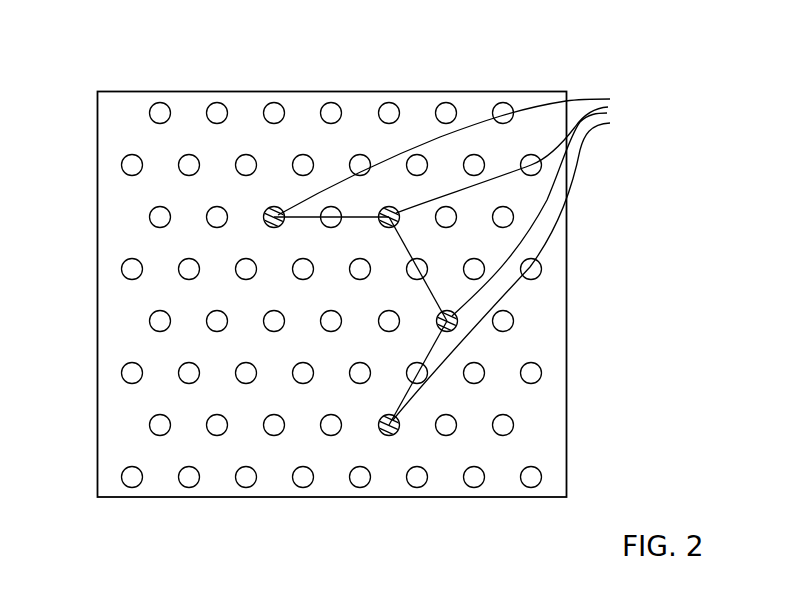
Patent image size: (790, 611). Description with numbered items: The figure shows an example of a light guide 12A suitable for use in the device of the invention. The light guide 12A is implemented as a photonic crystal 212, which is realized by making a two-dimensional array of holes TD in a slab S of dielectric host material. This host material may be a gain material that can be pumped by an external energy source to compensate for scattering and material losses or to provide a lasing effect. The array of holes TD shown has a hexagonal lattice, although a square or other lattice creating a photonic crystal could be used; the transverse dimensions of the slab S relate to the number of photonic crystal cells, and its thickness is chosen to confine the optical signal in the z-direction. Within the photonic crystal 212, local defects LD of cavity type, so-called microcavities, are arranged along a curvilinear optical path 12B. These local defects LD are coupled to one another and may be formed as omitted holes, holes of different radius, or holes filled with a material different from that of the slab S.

The photonic crystal 212 is at (478, 78).
The light guide 12A is at (331, 92).
The curvilinear optical path 12B is at (418, 241).
The local defects LD is at (457, 255).
The slab S is at (120, 208).
The holes TD is at (160, 435).